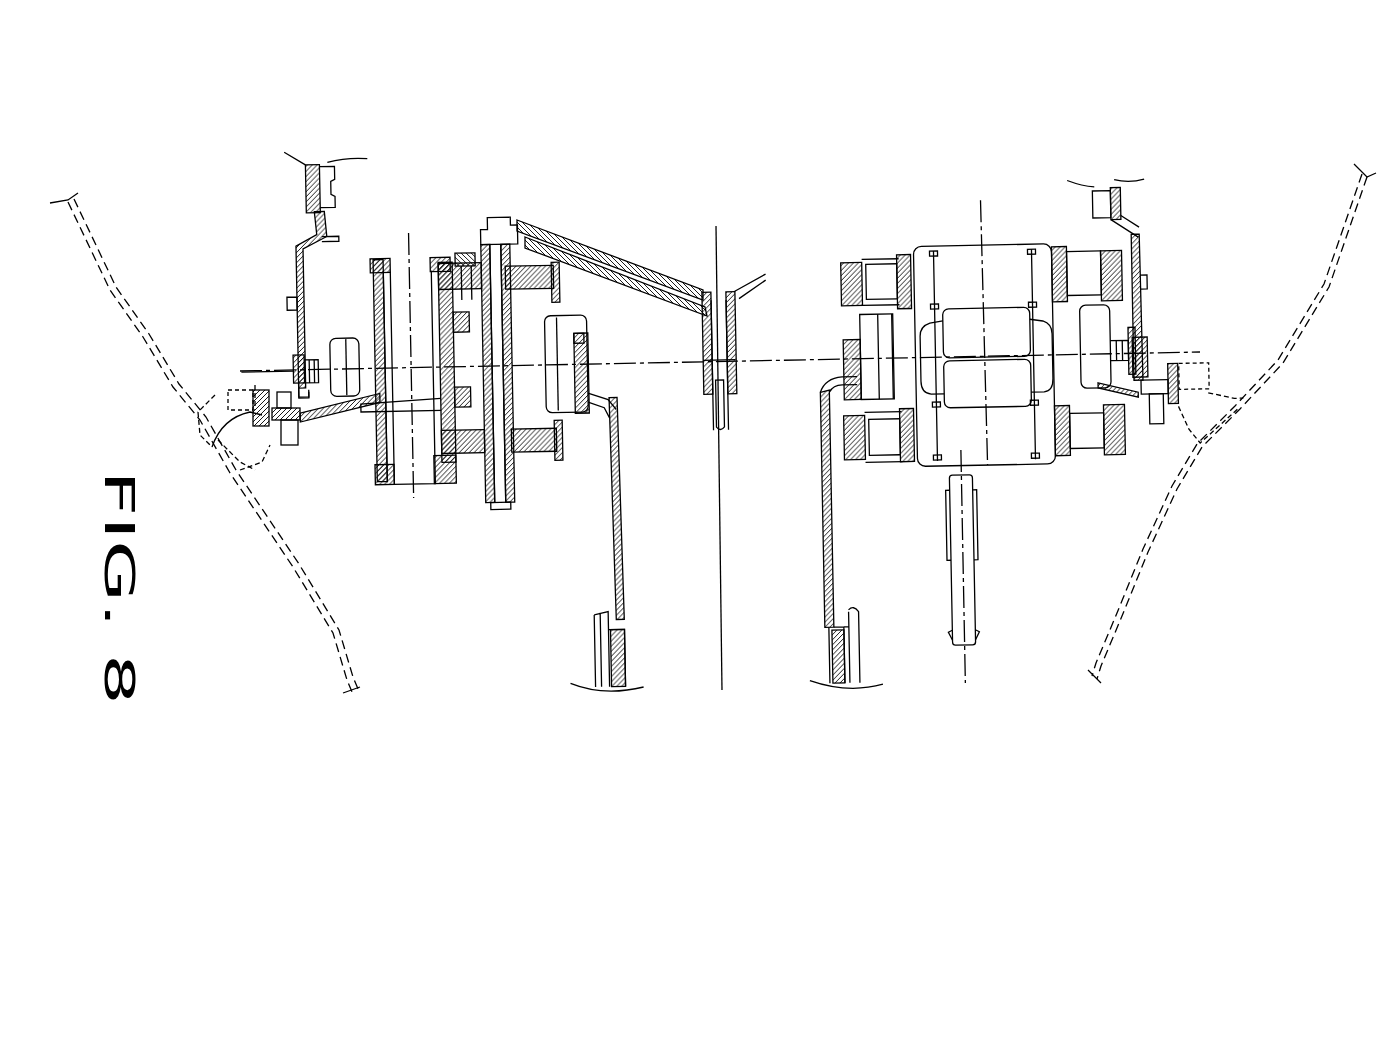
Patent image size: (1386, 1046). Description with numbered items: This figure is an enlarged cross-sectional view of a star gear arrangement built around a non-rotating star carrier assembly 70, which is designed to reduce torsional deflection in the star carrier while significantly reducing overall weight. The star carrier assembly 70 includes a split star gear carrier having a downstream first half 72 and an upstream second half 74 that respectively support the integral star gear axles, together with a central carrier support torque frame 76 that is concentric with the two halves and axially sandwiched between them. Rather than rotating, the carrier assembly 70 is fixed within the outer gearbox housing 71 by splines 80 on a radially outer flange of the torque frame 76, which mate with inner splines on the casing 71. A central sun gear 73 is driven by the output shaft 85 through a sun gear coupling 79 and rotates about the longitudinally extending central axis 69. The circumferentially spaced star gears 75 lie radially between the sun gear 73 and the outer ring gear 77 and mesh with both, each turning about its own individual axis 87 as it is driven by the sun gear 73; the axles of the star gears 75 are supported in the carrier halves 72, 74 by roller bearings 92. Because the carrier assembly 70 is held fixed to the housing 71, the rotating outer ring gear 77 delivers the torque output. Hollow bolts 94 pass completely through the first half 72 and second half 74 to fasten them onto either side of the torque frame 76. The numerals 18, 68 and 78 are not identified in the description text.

The engine casing 18 is at (210, 435).
The duct bracket 68 is at (308, 183).
The central axis 69 is at (715, 242).
The star carrier assembly 70 is at (340, 296).
The outer gearbox housing 71 is at (283, 543).
The first half 72 is at (543, 276).
The central sun gear 73 is at (858, 330).
The second half 74 is at (538, 455).
The star gears 75 is at (903, 330).
The central carrier support torque frame 76 is at (1160, 358).
The outer ring gear 77 is at (337, 350).
The support wall 78 is at (355, 413).
The sun gear coupling 79 is at (836, 531).
The splines 80 is at (250, 390).
The output shaft 85 is at (852, 662).
The individual axes 87 is at (983, 215).
The roller bearings 92 is at (1063, 240).
The bolts 94 is at (440, 250).